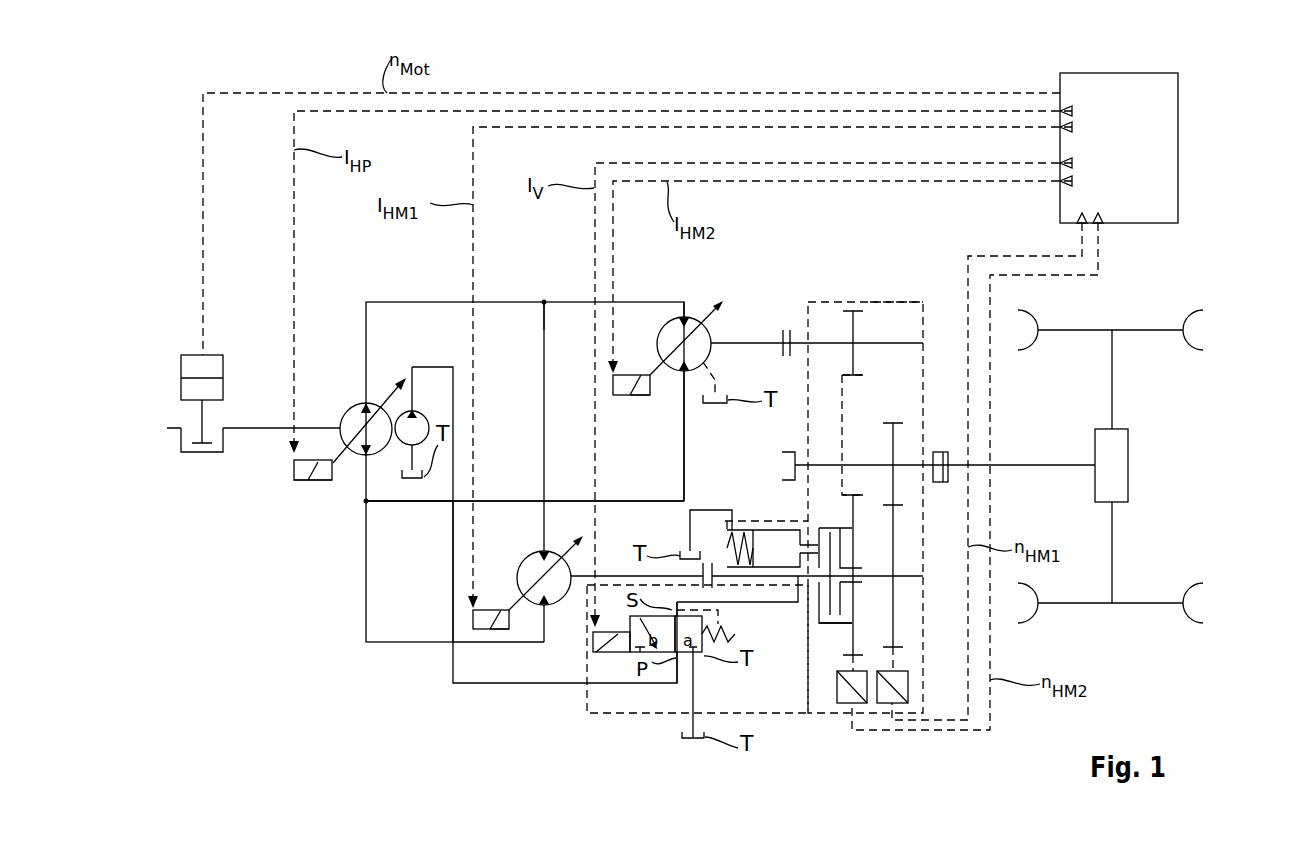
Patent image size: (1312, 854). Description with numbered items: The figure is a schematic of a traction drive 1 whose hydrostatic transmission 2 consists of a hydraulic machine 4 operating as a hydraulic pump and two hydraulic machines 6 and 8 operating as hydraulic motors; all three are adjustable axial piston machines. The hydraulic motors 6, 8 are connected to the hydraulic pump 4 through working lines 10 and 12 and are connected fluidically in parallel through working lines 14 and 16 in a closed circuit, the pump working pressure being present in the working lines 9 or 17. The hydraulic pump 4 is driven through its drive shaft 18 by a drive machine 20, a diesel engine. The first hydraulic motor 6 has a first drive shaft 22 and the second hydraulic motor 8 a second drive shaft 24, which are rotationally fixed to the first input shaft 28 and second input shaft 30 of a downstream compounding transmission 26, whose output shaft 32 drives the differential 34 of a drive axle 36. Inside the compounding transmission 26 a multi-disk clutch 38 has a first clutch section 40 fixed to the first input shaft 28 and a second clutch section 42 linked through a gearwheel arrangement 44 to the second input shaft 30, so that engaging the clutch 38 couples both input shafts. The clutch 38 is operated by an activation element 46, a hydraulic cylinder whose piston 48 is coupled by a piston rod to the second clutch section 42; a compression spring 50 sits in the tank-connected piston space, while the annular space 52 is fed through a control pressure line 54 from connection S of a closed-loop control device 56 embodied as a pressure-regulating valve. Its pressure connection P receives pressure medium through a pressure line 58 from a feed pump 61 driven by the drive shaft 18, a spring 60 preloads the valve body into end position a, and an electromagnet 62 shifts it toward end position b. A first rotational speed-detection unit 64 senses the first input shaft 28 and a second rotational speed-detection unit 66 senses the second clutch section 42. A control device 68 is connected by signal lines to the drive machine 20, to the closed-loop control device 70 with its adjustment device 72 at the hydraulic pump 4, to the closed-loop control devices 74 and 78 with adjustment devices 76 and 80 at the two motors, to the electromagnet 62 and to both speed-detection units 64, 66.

The traction drive 1 is at (1191, 144).
The hydrostatic transmission 2 is at (305, 698).
The hydraulic machine 4 is at (342, 403).
The first hydraulic motor 6 is at (557, 604).
The second hydraulic motor 8 is at (688, 317).
The working line 9 is at (362, 468).
The working line 10 is at (400, 642).
The working line 12 is at (544, 434).
The working line 14 is at (518, 502).
The working line 16 is at (545, 302).
The working line 17 is at (366, 318).
The drive shaft 18 is at (240, 430).
The drive machine 20 is at (178, 456).
The first drive shaft 22 is at (607, 560).
The second drive shaft 24 is at (740, 343).
The compounding transmission 26 is at (815, 302).
The first input shaft 28 is at (907, 577).
The second input shaft 30 is at (892, 316).
The output shaft 32 is at (852, 465).
The differential 34 is at (1130, 466).
The drive axle 36 is at (1137, 569).
The clutch 38 is at (825, 660).
The first clutch section 40 is at (818, 615).
The second clutch section 42 is at (818, 528).
The gearwheel arrangement 44 is at (843, 395).
The activation element 46 is at (775, 528).
The piston 48 is at (750, 530).
The compression spring 50 is at (733, 512).
The annular space 52 is at (762, 535).
The control pressure line 54 is at (768, 602).
The closed-loop control device 56 is at (617, 713).
The pressure line 58 is at (533, 684).
The spring 60 is at (731, 606).
The feed pump 61 is at (412, 422).
The electromagnet 62 is at (608, 652).
The first rotational speed-detection unit 64 is at (893, 707).
The second rotational speed-detection unit 66 is at (843, 707).
The control device 68 is at (1132, 164).
The closed-loop control device 70 is at (293, 490).
The adjustment device 72 is at (323, 490).
The closed-loop control device 74 is at (468, 648).
The adjustment device 76 is at (503, 648).
The closed-loop control device 78 is at (614, 406).
The adjustment device 80 is at (645, 406).